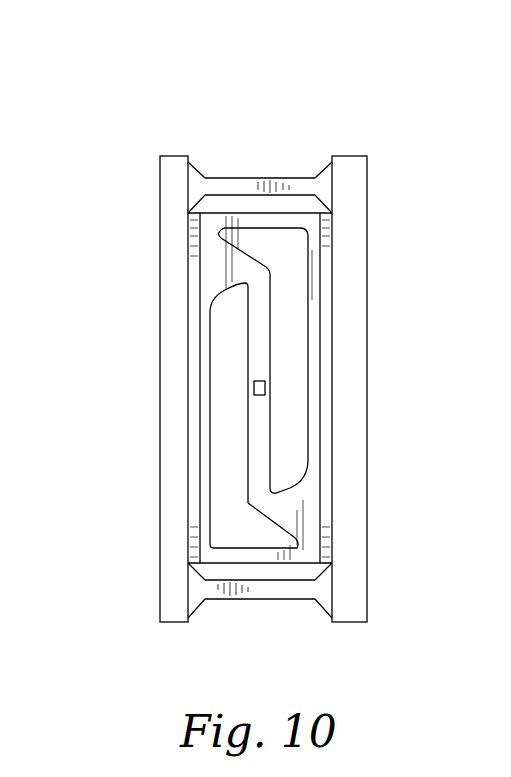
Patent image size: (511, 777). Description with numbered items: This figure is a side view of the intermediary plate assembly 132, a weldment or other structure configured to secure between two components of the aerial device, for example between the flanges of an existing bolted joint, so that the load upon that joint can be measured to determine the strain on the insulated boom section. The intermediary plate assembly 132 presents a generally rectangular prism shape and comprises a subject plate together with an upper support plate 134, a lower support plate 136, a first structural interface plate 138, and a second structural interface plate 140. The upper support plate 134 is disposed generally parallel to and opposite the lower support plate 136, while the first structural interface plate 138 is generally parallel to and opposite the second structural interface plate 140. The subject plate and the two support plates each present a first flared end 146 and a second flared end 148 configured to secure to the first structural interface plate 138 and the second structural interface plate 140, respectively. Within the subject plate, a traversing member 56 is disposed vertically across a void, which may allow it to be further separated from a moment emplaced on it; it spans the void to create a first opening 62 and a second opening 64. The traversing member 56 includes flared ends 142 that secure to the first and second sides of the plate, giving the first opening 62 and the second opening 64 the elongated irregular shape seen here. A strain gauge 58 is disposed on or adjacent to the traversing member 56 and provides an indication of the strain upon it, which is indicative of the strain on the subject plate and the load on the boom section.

The intermediary plate assembly 132 is at (441, 128).
The upper support plate 134 is at (233, 187).
The lower support plate 136 is at (264, 590).
The first structural interface plate 138 is at (170, 433).
The second structural interface plate 140 is at (355, 410).
The flared ends 142 is at (226, 273).
The first flared end 146 is at (208, 208).
The second flared end 148 is at (311, 212).
The second opening 64 is at (300, 320).
The traversing member 56 is at (255, 455).
The strain gauge 58 is at (254, 389).
The first opening 62 is at (218, 521).